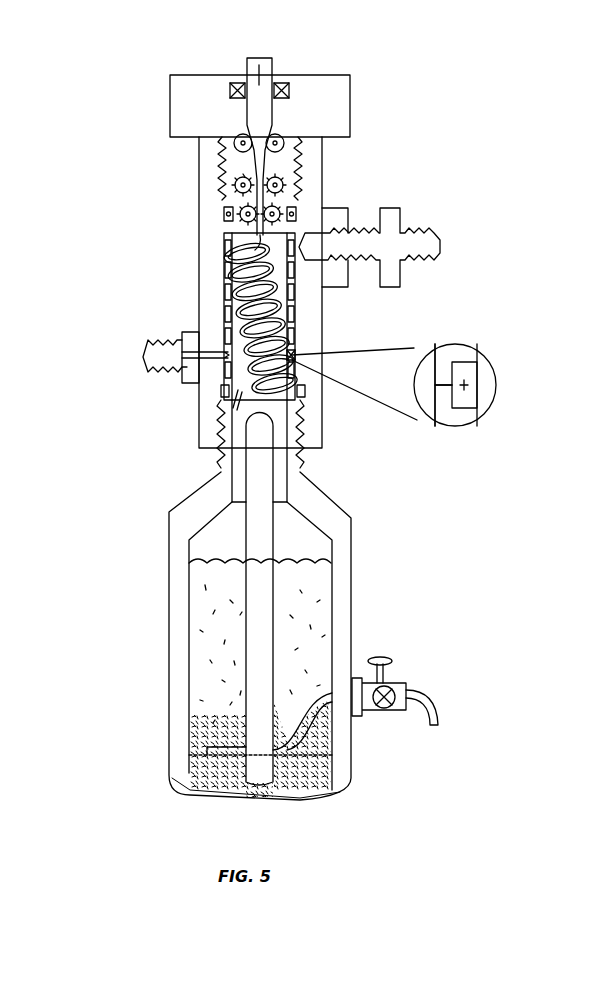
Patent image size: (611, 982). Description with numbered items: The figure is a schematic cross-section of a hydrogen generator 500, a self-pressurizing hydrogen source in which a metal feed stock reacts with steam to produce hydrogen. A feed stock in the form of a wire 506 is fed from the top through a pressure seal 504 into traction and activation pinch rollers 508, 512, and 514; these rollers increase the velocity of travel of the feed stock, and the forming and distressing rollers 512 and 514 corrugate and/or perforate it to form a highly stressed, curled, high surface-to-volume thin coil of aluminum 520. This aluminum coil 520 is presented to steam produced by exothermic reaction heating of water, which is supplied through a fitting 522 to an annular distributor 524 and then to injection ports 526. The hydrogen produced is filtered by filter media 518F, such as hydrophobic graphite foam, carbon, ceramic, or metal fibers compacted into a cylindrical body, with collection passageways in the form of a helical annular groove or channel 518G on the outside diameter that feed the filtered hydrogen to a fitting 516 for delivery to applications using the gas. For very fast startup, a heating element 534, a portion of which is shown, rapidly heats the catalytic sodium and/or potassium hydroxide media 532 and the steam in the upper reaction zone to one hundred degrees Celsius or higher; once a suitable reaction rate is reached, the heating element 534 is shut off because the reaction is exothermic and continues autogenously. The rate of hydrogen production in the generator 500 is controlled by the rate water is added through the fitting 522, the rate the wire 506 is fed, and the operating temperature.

The hydrogen generator 500 is at (128, 104).
The pressure seal 504 is at (298, 88).
The wire 506 is at (264, 76).
The traction and activation pinch rollers 508 is at (283, 137).
The forming and/or distressing rollers 512 is at (283, 178).
The forming and/or distressing rollers 514 is at (290, 206).
The fitting 516 is at (402, 208).
The filter media 518F is at (226, 268).
The helical annular groove or channel 518G is at (292, 304).
The thin coil of aluminum 520 is at (226, 250).
The fitting 522 is at (156, 346).
The annular distributor 524 is at (293, 352).
The injection ports 526 is at (436, 392).
The media 532 is at (206, 676).
The heating element 534 is at (253, 454).